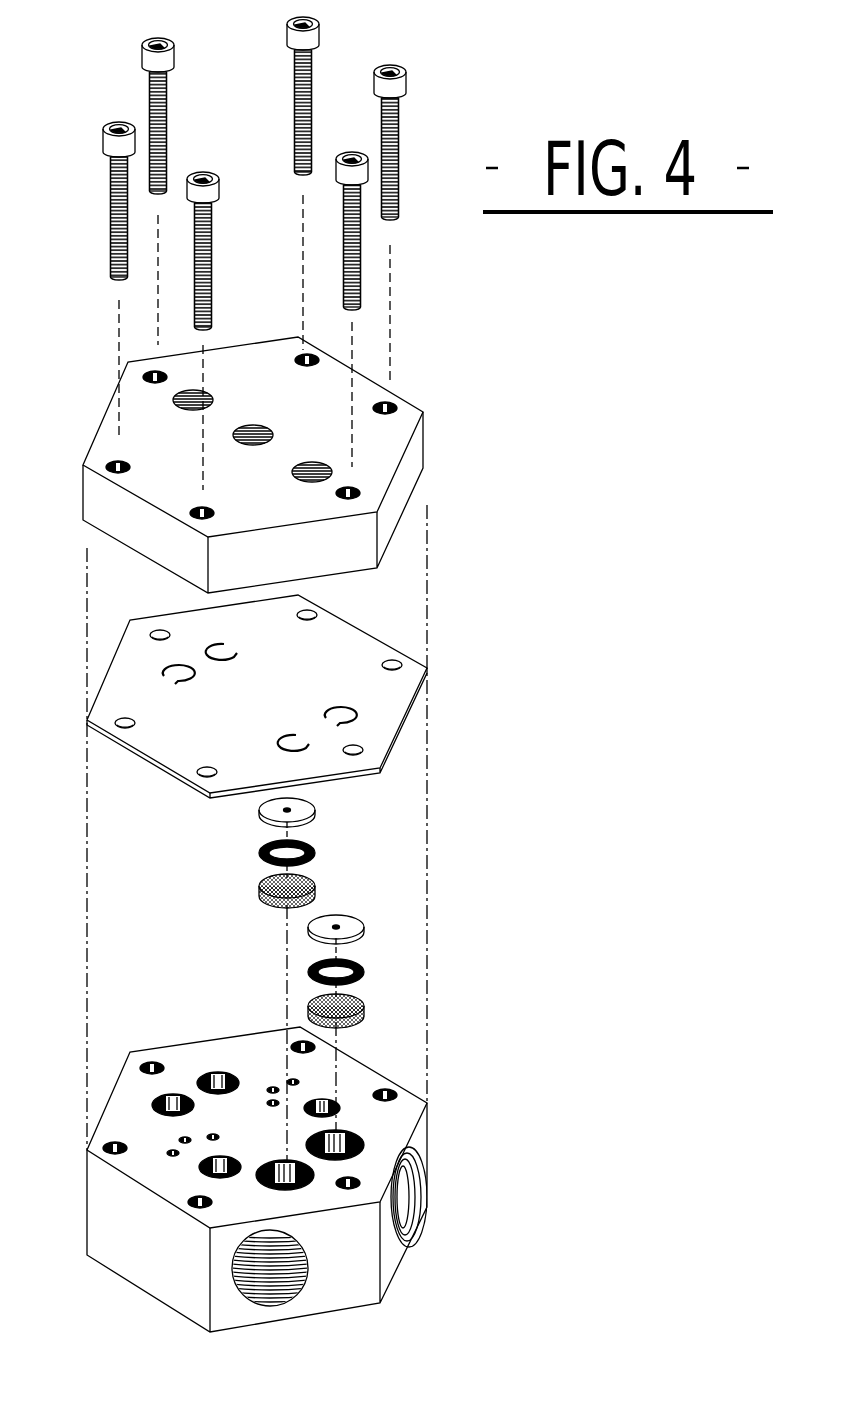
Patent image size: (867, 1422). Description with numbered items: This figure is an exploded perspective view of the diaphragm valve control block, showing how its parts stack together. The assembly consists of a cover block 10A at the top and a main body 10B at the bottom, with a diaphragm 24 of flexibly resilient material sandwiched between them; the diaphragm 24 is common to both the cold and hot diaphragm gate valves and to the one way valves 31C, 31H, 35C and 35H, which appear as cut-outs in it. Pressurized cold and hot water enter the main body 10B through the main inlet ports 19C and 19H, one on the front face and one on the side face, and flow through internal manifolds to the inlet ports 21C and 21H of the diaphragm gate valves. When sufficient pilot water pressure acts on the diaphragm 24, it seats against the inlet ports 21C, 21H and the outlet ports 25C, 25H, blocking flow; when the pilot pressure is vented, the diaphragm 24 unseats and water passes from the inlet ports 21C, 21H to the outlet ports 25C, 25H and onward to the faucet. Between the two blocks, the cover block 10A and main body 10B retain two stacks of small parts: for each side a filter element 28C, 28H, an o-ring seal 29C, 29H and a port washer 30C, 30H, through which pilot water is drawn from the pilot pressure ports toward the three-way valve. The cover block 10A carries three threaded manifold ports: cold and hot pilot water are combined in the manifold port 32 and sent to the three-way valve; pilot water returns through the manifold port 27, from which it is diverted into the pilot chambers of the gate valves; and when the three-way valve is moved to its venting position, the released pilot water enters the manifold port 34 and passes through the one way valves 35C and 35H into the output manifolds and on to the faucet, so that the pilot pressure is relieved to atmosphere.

The cover block 10A is at (291, 447).
The main body 10B is at (283, 1170).
The diaphragm 24 is at (261, 698).
The manifold port 27 is at (258, 423).
The manifold port 32 is at (332, 475).
The manifold port 34 is at (175, 400).
The one way valve 35C is at (228, 643).
The one way valve 35H is at (180, 677).
The one way valve 31C is at (350, 703).
The one way valve 31H is at (290, 752).
The port washer 30H is at (258, 813).
The o-ring seal 29H is at (258, 852).
The filter element 28H is at (258, 897).
The port washer 30C is at (367, 920).
The o-ring seal 29C is at (365, 967).
The filter element 28C is at (365, 1002).
The outlet port 25C is at (273, 1100).
The outlet port 25H is at (168, 1153).
The inlet port 21C is at (340, 1100).
The inlet port 21H is at (207, 1165).
The main inlet port 19C is at (405, 1248).
The main inlet port 19H is at (293, 1298).